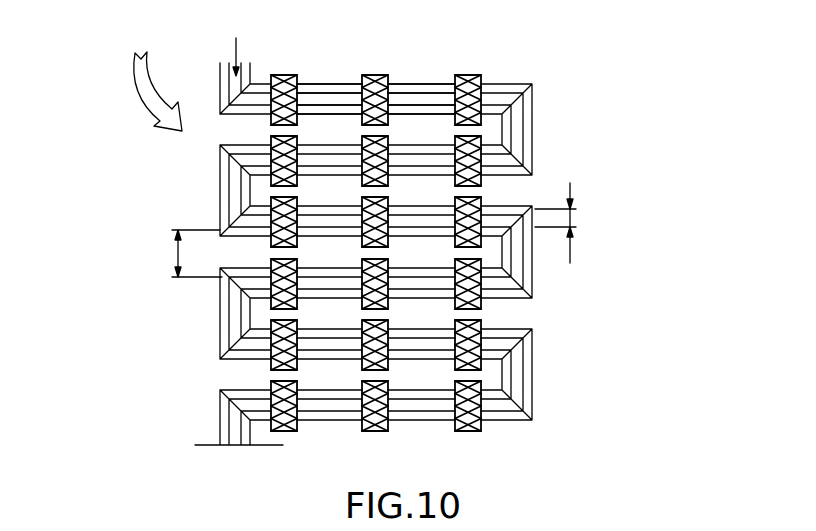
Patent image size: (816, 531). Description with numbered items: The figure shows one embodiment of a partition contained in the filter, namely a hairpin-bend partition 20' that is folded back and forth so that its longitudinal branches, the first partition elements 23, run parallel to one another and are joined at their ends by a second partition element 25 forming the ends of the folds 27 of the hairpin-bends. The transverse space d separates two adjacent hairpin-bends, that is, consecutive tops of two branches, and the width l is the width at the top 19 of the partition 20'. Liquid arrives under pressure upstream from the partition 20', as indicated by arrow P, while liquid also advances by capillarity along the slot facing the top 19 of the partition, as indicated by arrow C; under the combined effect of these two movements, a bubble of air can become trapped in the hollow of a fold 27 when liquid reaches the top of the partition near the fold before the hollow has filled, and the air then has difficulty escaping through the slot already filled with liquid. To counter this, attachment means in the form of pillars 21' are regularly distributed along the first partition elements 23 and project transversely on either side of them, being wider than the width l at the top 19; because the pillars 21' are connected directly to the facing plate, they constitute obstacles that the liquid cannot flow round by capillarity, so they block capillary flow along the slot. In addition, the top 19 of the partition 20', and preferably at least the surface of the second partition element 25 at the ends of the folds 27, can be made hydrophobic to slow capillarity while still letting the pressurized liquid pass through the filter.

The top of the partition 19 is at (328, 93).
The first partition elements 23 is at (416, 74).
The fold 27 is at (492, 118).
The second partition element 25 is at (552, 124).
The hairpin-bend partition 20' is at (433, 228).
The pillars 21' is at (547, 313).
The arrow C is at (237, 52).
The arrow P is at (153, 91).
The transverse space d is at (189, 253).
The width l is at (560, 224).